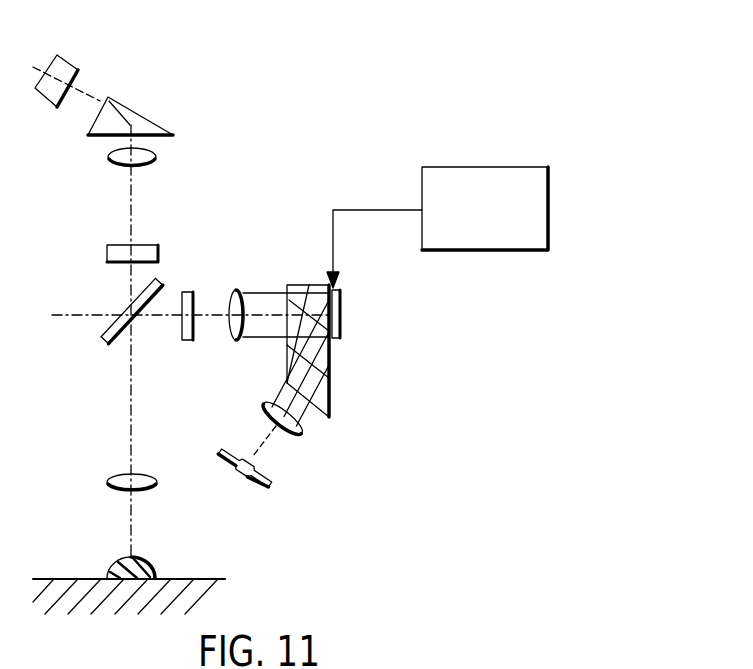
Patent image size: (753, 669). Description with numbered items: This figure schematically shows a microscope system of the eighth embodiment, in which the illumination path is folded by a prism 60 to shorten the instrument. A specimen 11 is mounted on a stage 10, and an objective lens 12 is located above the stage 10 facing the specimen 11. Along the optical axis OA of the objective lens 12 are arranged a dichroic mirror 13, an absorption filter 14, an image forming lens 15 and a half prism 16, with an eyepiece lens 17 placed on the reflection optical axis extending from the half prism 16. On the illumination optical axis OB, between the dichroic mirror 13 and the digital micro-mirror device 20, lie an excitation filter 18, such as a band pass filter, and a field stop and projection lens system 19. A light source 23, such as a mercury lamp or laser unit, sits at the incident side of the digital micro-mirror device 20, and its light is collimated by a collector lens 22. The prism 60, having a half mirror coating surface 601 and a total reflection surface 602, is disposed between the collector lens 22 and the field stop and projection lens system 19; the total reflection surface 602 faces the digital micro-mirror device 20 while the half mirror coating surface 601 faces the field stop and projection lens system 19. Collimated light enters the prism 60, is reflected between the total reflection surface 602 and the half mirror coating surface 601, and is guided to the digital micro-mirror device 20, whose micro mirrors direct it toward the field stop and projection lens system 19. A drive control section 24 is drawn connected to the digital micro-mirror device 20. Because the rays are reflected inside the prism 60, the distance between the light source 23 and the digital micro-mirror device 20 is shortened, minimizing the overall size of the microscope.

The stage 10 is at (210, 579).
The specimen 11 is at (108, 567).
The objective lens 12 is at (107, 485).
The dichroic mirror 13 is at (102, 338).
The absorption filter 14 is at (107, 253).
The image forming lens 15 is at (108, 158).
The half prism 16 is at (135, 113).
The eyepiece lens 17 is at (74, 60).
The excitation filter 18 is at (183, 292).
The field stop and projection lens system 19 is at (237, 341).
The digital micro-mirror device 20 is at (341, 313).
The collector lens 22 is at (304, 433).
The light source 23 is at (270, 484).
The drive control section 24 is at (549, 212).
The prism 60 is at (344, 391).
The half mirror coating surface 601 is at (304, 285).
The total reflection surface 602 is at (329, 366).
The optical axis OA is at (133, 445).
The illumination optical axis OB is at (172, 317).